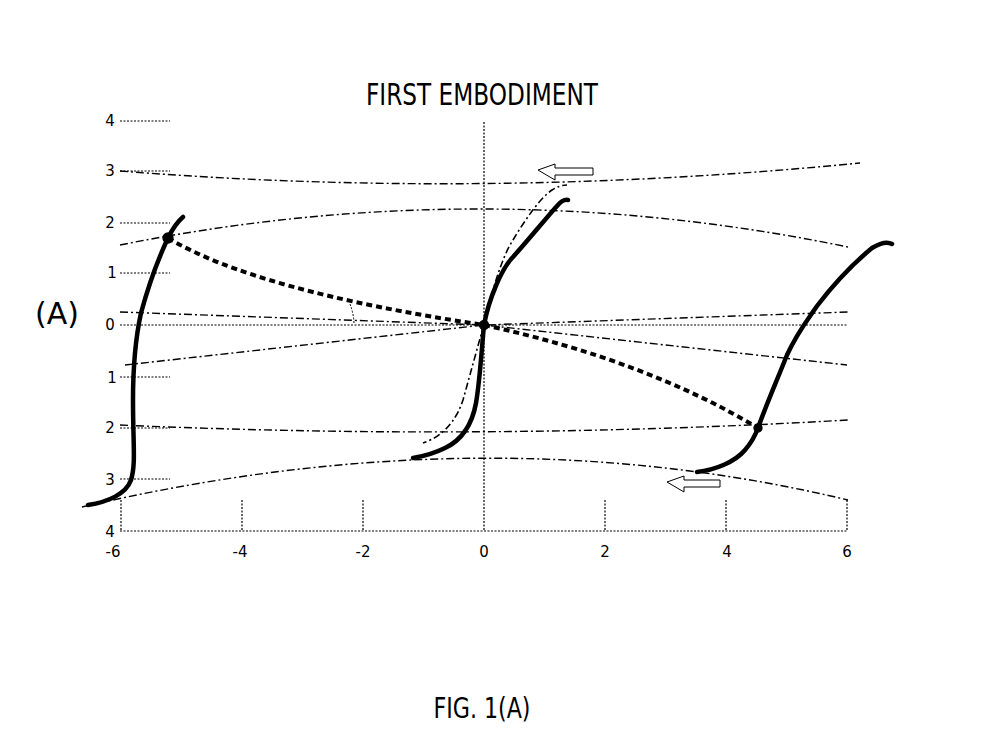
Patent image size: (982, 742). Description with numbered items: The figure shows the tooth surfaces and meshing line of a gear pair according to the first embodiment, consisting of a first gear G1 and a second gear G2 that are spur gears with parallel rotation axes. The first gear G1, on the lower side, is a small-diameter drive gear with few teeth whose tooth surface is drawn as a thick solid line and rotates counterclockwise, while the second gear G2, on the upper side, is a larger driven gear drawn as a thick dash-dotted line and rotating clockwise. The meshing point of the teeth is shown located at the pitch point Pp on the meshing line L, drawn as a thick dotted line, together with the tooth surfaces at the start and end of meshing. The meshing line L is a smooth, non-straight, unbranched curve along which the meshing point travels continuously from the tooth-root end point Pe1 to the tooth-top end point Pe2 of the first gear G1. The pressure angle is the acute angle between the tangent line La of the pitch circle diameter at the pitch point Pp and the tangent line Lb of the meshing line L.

The first gear G1 is at (131, 455).
The second gear G2 is at (447, 418).
The pitch point Pp is at (481, 320).
The end point on the meshing line on the tooth-root side Pe1 is at (765, 432).
The end point on the meshing line on the tooth-top side Pe2 is at (176, 234).
The meshing line L is at (697, 390).
The tangent line of pitch circle diameter La is at (297, 329).
The tangent line of the meshing line Lb is at (322, 293).